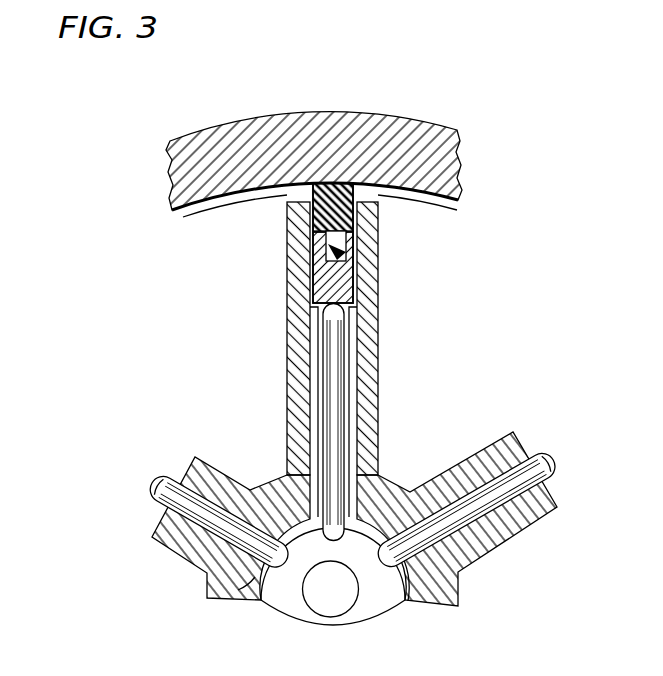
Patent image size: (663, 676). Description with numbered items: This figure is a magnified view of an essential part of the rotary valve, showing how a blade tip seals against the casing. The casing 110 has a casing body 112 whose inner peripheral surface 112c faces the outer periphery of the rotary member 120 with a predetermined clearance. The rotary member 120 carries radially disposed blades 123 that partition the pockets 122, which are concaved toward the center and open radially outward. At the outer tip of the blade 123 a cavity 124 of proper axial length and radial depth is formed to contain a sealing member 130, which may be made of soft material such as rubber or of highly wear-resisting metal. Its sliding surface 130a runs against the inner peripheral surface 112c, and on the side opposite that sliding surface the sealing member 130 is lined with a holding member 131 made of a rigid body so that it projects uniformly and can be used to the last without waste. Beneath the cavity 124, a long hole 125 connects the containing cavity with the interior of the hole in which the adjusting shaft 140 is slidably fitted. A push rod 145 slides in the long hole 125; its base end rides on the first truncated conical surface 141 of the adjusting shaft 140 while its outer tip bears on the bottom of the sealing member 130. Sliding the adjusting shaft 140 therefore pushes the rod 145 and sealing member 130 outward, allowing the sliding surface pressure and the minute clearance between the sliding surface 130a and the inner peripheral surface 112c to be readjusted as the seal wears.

The casing 110 is at (419, 118).
The casing body 112 is at (362, 128).
The inner peripheral surface 112c is at (457, 210).
The rotary member 120 is at (211, 583).
The pocket 122 is at (414, 456).
The blade 123 is at (366, 332).
The cavity 124 is at (322, 244).
The long hole 125 is at (341, 416).
The sealing member 130 is at (355, 248).
The sliding surface 130a is at (330, 182).
The holding member 131 is at (328, 275).
The adjusting shaft 140 is at (239, 589).
The first truncated conical surface 141 is at (372, 604).
The push rod 145 is at (333, 443).